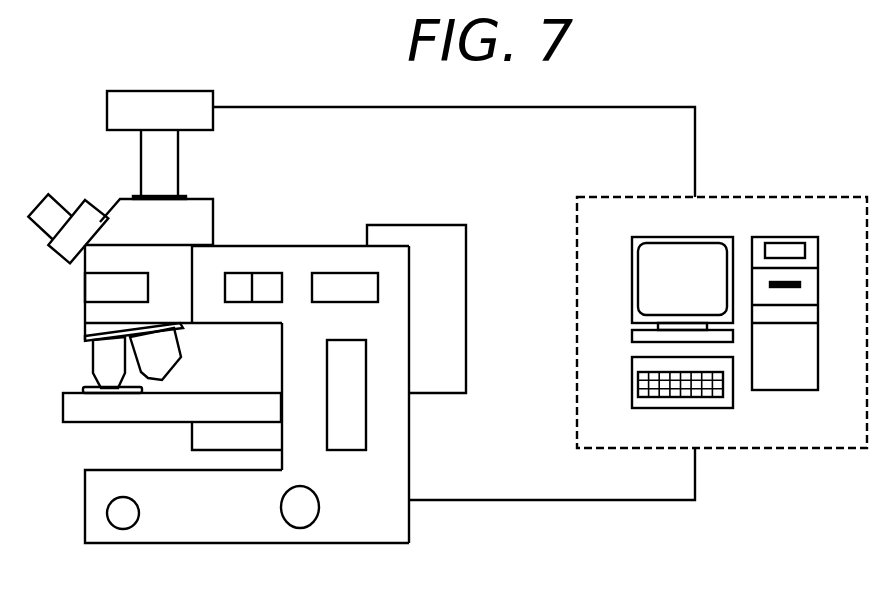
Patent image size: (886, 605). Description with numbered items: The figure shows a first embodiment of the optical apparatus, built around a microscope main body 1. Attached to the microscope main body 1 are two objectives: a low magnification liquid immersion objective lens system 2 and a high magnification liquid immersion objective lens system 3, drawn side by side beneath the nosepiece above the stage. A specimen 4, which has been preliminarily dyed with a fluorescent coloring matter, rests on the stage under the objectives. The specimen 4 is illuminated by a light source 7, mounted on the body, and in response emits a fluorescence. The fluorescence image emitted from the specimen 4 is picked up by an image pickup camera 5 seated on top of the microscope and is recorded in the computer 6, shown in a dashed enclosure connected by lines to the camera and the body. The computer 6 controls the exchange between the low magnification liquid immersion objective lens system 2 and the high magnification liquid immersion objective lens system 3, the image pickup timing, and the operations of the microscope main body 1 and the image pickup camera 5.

The microscope main body 1 is at (202, 527).
The low magnification liquid immersion objective lens system 2 is at (103, 360).
The high magnification liquid immersion objective lens system 3 is at (175, 358).
The specimen 4 is at (83, 388).
The image pickup camera 5 is at (127, 90).
The computer 6 is at (723, 197).
The light source 7 is at (438, 240).